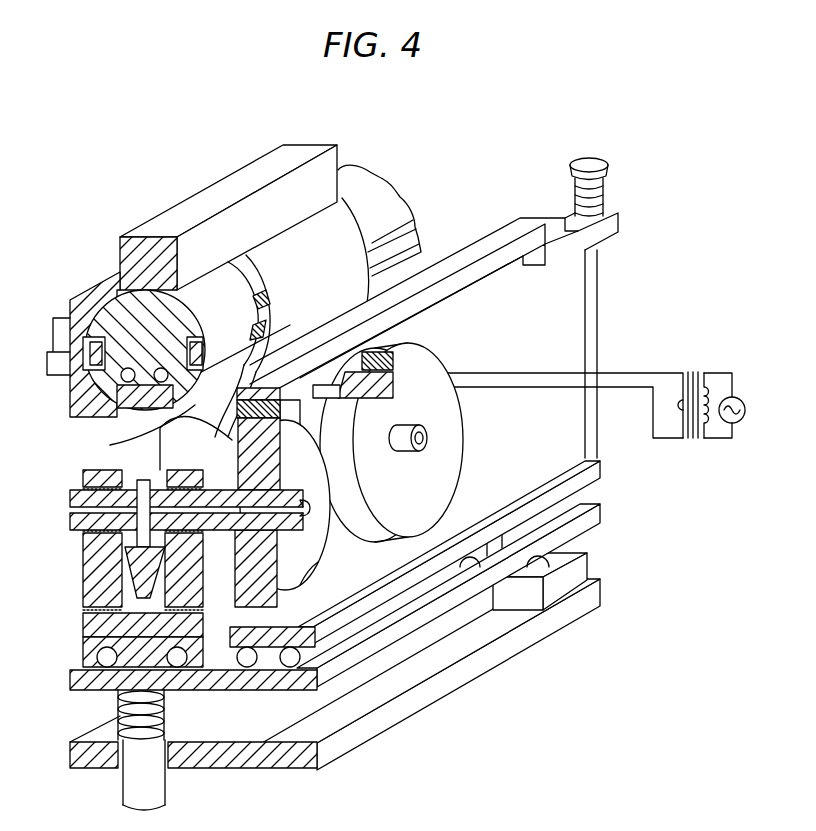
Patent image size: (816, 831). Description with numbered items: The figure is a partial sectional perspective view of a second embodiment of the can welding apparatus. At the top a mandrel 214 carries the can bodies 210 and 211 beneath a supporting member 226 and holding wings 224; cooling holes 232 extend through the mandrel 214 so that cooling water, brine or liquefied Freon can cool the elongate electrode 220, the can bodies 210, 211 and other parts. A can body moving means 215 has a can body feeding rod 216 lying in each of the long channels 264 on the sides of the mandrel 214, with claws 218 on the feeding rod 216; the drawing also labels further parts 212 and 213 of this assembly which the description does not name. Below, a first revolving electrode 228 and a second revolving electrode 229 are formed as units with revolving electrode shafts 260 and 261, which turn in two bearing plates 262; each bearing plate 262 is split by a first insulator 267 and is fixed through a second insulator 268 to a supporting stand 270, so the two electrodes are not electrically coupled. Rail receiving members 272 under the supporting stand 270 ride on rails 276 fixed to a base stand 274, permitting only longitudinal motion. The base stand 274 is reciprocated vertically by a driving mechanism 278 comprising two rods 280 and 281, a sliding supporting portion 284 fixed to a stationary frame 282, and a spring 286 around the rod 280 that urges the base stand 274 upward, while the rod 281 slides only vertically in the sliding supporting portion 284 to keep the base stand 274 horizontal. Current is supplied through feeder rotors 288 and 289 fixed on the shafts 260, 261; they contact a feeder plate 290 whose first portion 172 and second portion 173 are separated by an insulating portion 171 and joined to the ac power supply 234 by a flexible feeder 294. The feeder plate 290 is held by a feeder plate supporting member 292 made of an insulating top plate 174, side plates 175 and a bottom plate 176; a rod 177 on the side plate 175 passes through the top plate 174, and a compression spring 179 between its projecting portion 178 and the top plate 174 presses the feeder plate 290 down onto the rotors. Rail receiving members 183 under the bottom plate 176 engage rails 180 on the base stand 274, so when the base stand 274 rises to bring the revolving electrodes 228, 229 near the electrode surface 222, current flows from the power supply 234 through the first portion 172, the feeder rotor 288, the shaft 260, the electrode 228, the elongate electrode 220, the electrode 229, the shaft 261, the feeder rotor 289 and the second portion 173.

The insulating portion 171 is at (350, 360).
The first portion 172 is at (298, 405).
The second portion 173 is at (477, 299).
The top plate 174 is at (520, 226).
The side plate 175 is at (598, 294).
The bottom plate 176 is at (593, 474).
The rod 177 is at (601, 195).
The projecting portion 178 is at (607, 162).
The compression spring 179 is at (605, 205).
The rails 180 is at (283, 688).
The rail receiving members 183 is at (487, 556).
The can body 210 is at (217, 277).
The can body 211 is at (300, 226).
The web strip 212 is at (197, 400).
The rod 213 is at (318, 327).
The mandrel 214 is at (390, 188).
The can body moving means 215 is at (425, 230).
The can body feeding rod 216 is at (204, 362).
The claws 218 is at (196, 360).
The elongate electrode 220 is at (120, 418).
The electrode surface 222 is at (110, 445).
The holding wings 224 is at (95, 283).
The supporting member 226 is at (243, 173).
The first revolving electrode 228 is at (408, 500).
The second revolving electrode 229 is at (270, 343).
The cooling holes 232 is at (115, 388).
The ac power supply 234 is at (712, 440).
The first revolving electrode shaft 260 is at (290, 578).
The second revolving electrode shaft 261 is at (404, 452).
The bearing plates 262 is at (93, 560).
The long channels 264 is at (193, 335).
The first insulator 267 is at (276, 448).
The second insulator 268 is at (83, 611).
The supporting stand 270 is at (83, 636).
The rail receiving members 272 is at (100, 648).
The base stand 274 is at (315, 687).
The rails 276 is at (188, 684).
The driving mechanism 278 is at (175, 795).
The rod 280 is at (124, 795).
The rod 281 is at (547, 562).
The frame 282 is at (464, 674).
The sliding supporting portion 284 is at (583, 563).
The spring 286 is at (170, 726).
The first feeder rotor 288 is at (317, 574).
The second feeder rotor 289 is at (433, 514).
The feeder plate 290 is at (445, 332).
The feeder plate supporting member 292 is at (600, 430).
The flexible feeder 294 is at (619, 372).